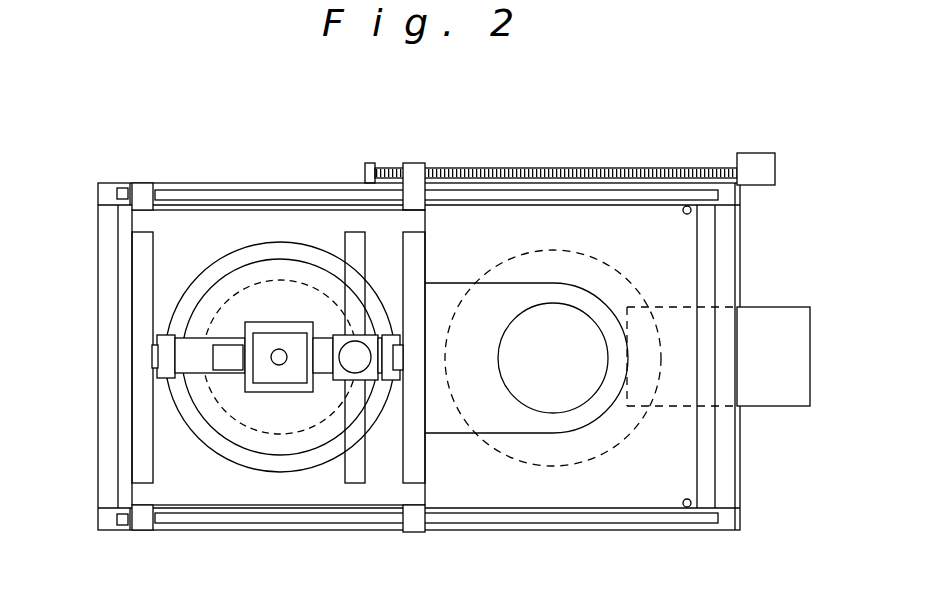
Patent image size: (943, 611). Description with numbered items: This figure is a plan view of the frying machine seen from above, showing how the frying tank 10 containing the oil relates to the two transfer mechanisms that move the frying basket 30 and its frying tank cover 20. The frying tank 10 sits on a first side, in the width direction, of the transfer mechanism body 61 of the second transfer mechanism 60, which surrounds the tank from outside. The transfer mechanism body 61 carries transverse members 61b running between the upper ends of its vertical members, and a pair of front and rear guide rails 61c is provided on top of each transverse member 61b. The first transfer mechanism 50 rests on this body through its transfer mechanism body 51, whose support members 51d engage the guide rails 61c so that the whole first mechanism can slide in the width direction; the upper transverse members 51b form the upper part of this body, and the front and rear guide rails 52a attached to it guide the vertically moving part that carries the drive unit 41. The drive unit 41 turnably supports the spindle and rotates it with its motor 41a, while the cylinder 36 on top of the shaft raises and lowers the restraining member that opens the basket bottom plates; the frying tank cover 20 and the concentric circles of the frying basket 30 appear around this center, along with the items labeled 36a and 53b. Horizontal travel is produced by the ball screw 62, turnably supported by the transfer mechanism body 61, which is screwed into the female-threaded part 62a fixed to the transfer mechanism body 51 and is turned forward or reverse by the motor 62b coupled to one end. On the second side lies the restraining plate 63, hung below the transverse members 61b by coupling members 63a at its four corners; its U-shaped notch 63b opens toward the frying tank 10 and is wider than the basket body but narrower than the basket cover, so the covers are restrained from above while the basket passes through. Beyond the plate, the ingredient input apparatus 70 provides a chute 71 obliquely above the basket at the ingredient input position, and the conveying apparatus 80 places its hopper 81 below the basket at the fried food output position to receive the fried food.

The frying tank 10 is at (270, 490).
The frying tank cover 20 is at (189, 307).
The frying basket 30 is at (226, 437).
The cylinder 36 is at (283, 333).
The holder recess 36a is at (270, 392).
The drive unit 41 is at (208, 287).
The motor 41a is at (228, 372).
The first transfer mechanism 50 is at (263, 206).
The transfer mechanism body 51 is at (138, 451).
The upper transverse members 51b is at (208, 218).
The support members 51d is at (143, 185).
The guide rails 52a is at (153, 357).
The coupling 53b is at (360, 340).
The second transfer mechanism 60 is at (666, 152).
The transfer mechanism body 61 is at (325, 184).
The transverse members 61b is at (113, 187).
The guide rails 61c is at (493, 190).
The ball screw 62 is at (579, 168).
The female-threaded part 62a is at (416, 163).
The motor 62b is at (757, 158).
The restraining plate 63 is at (470, 497).
The coupling members 63a is at (413, 517).
The notch 63b is at (482, 430).
The ingredient input apparatus 70 is at (765, 407).
The chute 71 is at (770, 306).
The conveying apparatus 80 is at (578, 470).
The hopper 81 is at (640, 430).